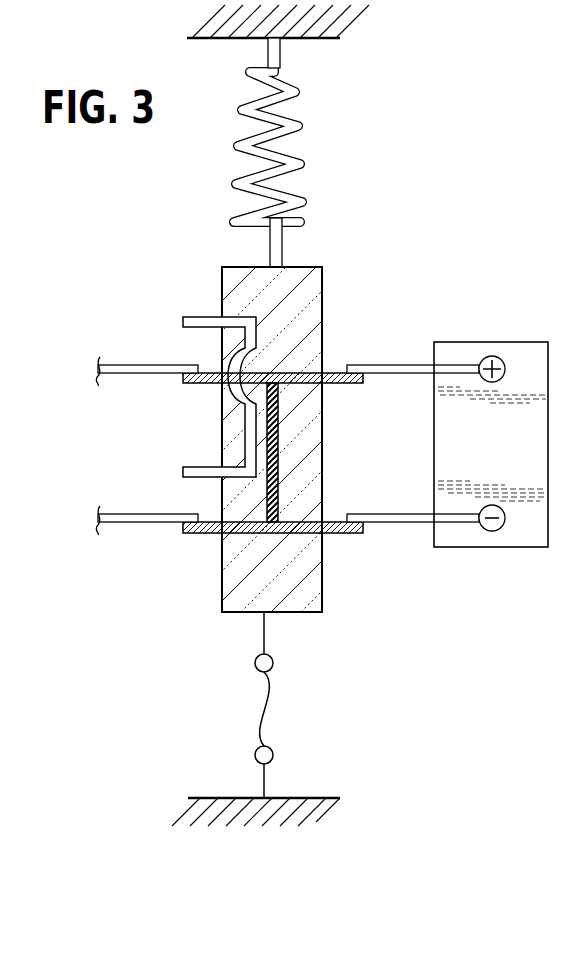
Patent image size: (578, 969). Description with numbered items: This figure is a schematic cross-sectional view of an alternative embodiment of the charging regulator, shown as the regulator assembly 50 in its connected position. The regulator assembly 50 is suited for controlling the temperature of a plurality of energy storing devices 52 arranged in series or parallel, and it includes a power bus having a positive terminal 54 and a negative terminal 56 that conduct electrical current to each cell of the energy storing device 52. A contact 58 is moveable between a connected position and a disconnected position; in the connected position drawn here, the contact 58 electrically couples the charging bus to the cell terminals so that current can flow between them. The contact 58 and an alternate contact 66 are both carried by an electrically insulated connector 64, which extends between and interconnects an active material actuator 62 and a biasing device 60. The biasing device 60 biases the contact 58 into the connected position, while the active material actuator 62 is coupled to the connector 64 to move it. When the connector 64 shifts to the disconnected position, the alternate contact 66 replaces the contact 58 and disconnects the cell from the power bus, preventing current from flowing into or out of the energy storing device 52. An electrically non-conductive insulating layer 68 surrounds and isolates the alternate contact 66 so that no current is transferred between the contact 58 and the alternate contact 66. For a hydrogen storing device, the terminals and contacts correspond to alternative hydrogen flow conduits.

The regulator assembly 50 is at (428, 223).
The energy storing device 52 is at (495, 342).
The positive terminal 54 is at (157, 365).
The negative terminal 56 is at (157, 514).
The contact 58 is at (303, 371).
The biasing device 60 is at (297, 127).
The active material actuator 62 is at (287, 702).
The connector 64 is at (222, 590).
The alternate contact 66 is at (197, 465).
The insulating layer 68 is at (278, 405).